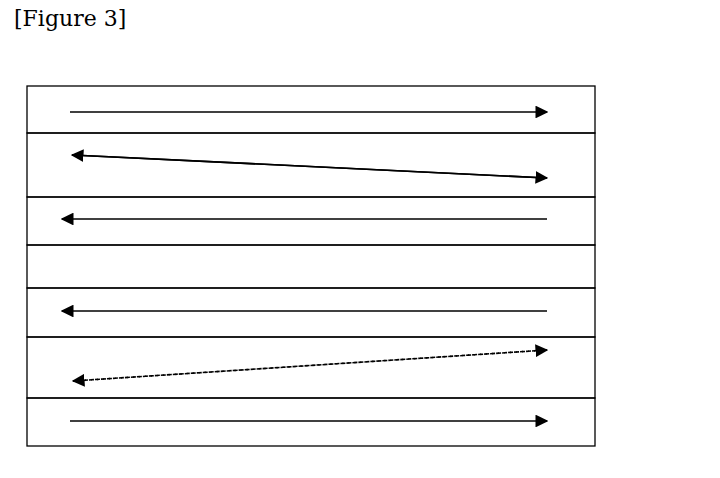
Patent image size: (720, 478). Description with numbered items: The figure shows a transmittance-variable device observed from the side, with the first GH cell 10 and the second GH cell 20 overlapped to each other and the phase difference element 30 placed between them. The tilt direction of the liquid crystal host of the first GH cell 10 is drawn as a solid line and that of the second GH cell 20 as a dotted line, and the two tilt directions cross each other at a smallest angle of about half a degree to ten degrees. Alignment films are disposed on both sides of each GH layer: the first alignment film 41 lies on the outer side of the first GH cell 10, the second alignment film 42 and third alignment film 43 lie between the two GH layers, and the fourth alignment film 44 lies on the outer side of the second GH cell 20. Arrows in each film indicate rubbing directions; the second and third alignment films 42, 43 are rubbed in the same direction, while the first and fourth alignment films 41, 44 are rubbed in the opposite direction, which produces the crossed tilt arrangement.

The first alignment film 41 is at (595, 114).
The first GH cell 10 is at (595, 174).
The second alignment film 42 is at (595, 236).
The phase difference element 30 is at (311, 266).
The third alignment film 43 is at (595, 308).
The second GH cell 20 is at (595, 372).
The fourth alignment film 44 is at (595, 432).